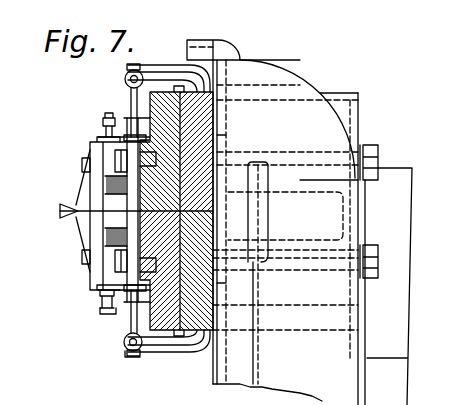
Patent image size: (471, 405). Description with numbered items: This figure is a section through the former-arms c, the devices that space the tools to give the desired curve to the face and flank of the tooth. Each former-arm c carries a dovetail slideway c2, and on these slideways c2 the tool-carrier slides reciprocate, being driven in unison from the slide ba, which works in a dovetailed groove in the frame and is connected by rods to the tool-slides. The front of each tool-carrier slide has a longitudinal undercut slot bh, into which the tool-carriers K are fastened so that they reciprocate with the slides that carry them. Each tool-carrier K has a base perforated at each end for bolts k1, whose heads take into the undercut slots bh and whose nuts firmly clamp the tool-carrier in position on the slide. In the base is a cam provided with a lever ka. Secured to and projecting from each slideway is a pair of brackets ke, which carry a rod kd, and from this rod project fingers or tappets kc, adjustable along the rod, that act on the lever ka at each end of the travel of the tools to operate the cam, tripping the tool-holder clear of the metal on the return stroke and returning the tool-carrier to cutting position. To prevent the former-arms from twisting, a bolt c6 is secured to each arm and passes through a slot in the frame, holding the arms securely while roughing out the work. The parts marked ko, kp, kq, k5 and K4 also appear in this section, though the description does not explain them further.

The former-arm c is at (216, 86).
The slideway c2 is at (214, 133).
The bolt c6 is at (366, 157).
The tool-carrier K is at (102, 189).
The bracket ke is at (152, 66).
The rod kd is at (124, 355).
The finger or tappet kc is at (126, 352).
The lever ka is at (128, 132).
The bolt ko is at (106, 118).
The bolt kp is at (100, 298).
The nut kq is at (102, 313).
The undercut slot bh is at (125, 152).
The bolt k1 is at (110, 163).
The lever arm k5 is at (84, 262).
The wedge K4 is at (60, 211).
The slide ba is at (86, 224).